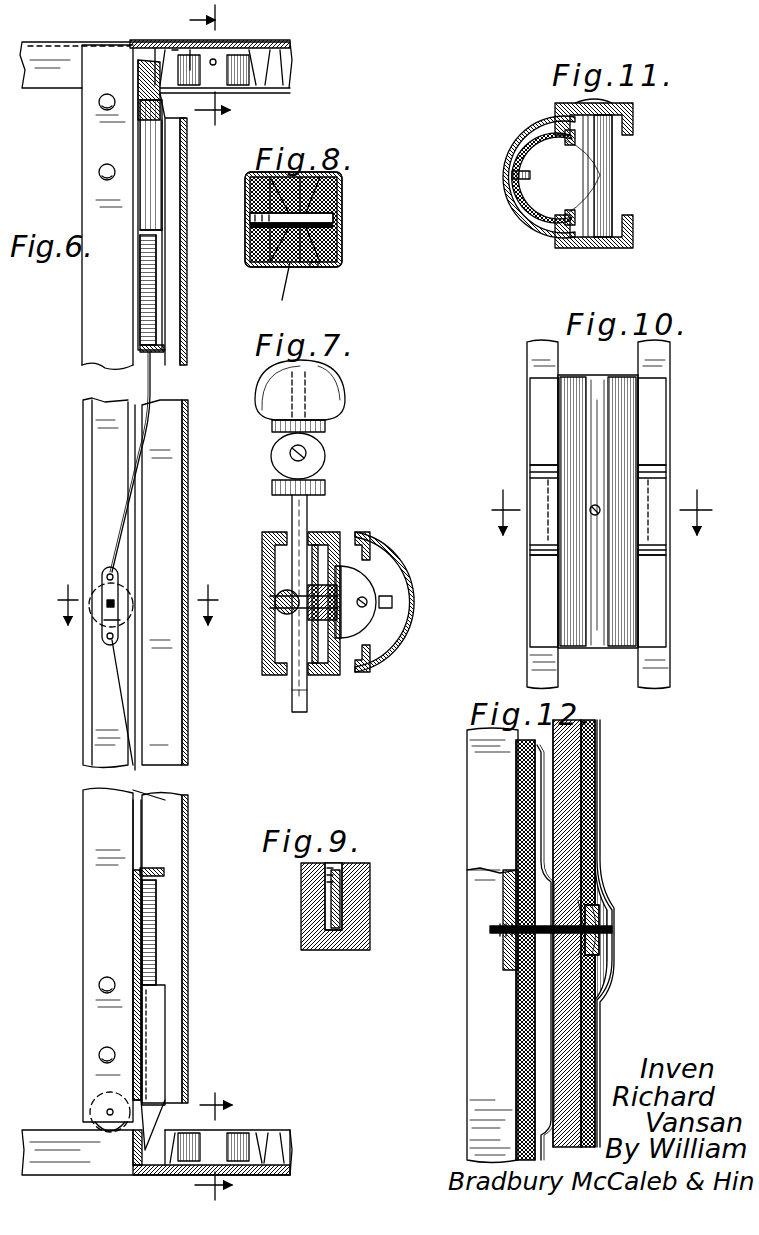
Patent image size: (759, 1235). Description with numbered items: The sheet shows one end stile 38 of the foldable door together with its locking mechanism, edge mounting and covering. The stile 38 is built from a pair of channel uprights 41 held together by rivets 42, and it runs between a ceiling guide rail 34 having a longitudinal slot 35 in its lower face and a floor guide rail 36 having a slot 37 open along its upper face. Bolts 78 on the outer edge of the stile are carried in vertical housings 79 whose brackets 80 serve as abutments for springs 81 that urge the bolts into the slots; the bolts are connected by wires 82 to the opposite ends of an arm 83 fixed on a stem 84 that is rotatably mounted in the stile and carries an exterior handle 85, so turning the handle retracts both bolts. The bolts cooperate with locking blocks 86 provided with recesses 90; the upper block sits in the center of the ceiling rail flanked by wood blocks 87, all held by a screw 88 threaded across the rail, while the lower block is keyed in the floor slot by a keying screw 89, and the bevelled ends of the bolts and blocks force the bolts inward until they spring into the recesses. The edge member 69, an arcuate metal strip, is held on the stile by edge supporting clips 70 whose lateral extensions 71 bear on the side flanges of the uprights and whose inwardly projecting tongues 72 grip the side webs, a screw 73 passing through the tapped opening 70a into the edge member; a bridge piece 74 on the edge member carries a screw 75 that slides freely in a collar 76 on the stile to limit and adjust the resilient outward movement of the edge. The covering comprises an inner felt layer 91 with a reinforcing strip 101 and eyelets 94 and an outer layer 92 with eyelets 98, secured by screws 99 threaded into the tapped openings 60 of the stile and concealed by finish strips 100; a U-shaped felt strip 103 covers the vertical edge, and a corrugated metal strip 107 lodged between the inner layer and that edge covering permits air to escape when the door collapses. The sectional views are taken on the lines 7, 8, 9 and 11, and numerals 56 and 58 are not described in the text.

In FIG. 6, the guide rail 34 is at (62, 45).
In FIG. 8, the guide rail 34 is at (340, 200).
In FIG. 6, the tapped openings 60 is at (115, 52).
In FIG. 12, the tapped openings 60 is at (505, 918).
In FIG. 6, the locking blocks 86 is at (235, 48).
In FIG. 8, the locking blocks 86 is at (290, 268).
In FIG. 9, the locking blocks 86 is at (330, 908).
In FIG. 6, the recesses 90 is at (260, 112).
In FIG. 6, the section line 8- 8 is at (201, 69).
In FIG. 6, the uprights 41 is at (98, 440).
In FIG. 10, the uprights 41 is at (540, 665).
In FIG. 11, the uprights 41 is at (635, 118).
In FIG. 12, the uprights 41 is at (470, 798).
In FIG. 6, the rivets 42 is at (100, 172).
In FIG. 6, the edge member 69 is at (183, 498).
In FIG. 7, the edge member 69 is at (378, 548).
In FIG. 11, the edge member 69 is at (510, 205).
In FIG. 6, the bolts 78 is at (165, 130).
In FIG. 6, the housings 79 is at (150, 192).
In FIG. 6, the springs 81 is at (142, 298).
In FIG. 6, the brackets 80 is at (160, 350).
In FIG. 6, the wires 82 is at (128, 480).
In FIG. 6, the handle 85 is at (83, 580).
In FIG. 7, the handle 85 is at (270, 398).
In FIG. 6, the stem 84 is at (115, 605).
In FIG. 7, the stem 84 is at (298, 705).
In FIG. 6, the arm 83 is at (118, 640).
In FIG. 7, the arm 83 is at (275, 606).
In FIG. 6, the section line 7- 7 is at (137, 602).
In FIG. 6, the bottom rail 56 is at (62, 1145).
In FIG. 6, the longitudinal slot 37 is at (282, 1135).
In FIG. 6, the pivot 58 is at (108, 1128).
In FIG. 6, the section line 9- 9 is at (203, 1140).
In FIG. 8, the wood block 87 is at (250, 242).
In FIG. 8, the screw 88 is at (340, 218).
In FIG. 8, the longitudinal slot 35 is at (272, 265).
In FIG. 9, the guide rail 36 is at (360, 885).
In FIG. 9, the keying screw 89 is at (328, 880).
In FIG. 7, the stile 38 is at (268, 693).
In FIG. 10, the stile 38 is at (525, 365).
In FIG. 11, the stile 38 is at (635, 103).
In FIG. 12, the stile 38 is at (465, 760).
In FIG. 7, the collars 76 is at (322, 595).
In FIG. 7, the bridge piece 74 is at (365, 560).
In FIG. 7, the screw 75 is at (394, 602).
In FIG. 10, the edge supporting clip 70 is at (580, 405).
In FIG. 11, the edge supporting clip 70 is at (525, 150).
In FIG. 11, the tapped opening 70a is at (510, 172).
In FIG. 10, the lateral extensions 71 is at (660, 440).
In FIG. 11, the lateral extensions 71 is at (540, 125).
In FIG. 10, the tongues 72 is at (545, 540).
In FIG. 11, the tongues 72 is at (570, 215).
In FIG. 10, the screw 73 is at (600, 508).
In FIG. 11, the screw 73 is at (512, 178).
In FIG. 10, the section line 11- 11 is at (603, 512).
In FIG. 12, the reinforcing strip 101 is at (580, 745).
In FIG. 12, the inner layer 91 is at (575, 790).
In FIG. 12, the outer layer 92 is at (592, 810).
In FIG. 12, the eyelets 94 is at (603, 895).
In FIG. 12, the eyelets 98 is at (610, 922).
In FIG. 12, the screws 99 is at (495, 930).
In FIG. 12, the finish strips 100 is at (598, 1020).
In FIG. 12, the strip of felt 103 is at (530, 1085).
In FIG. 12, the corrugated strip 107 is at (525, 815).